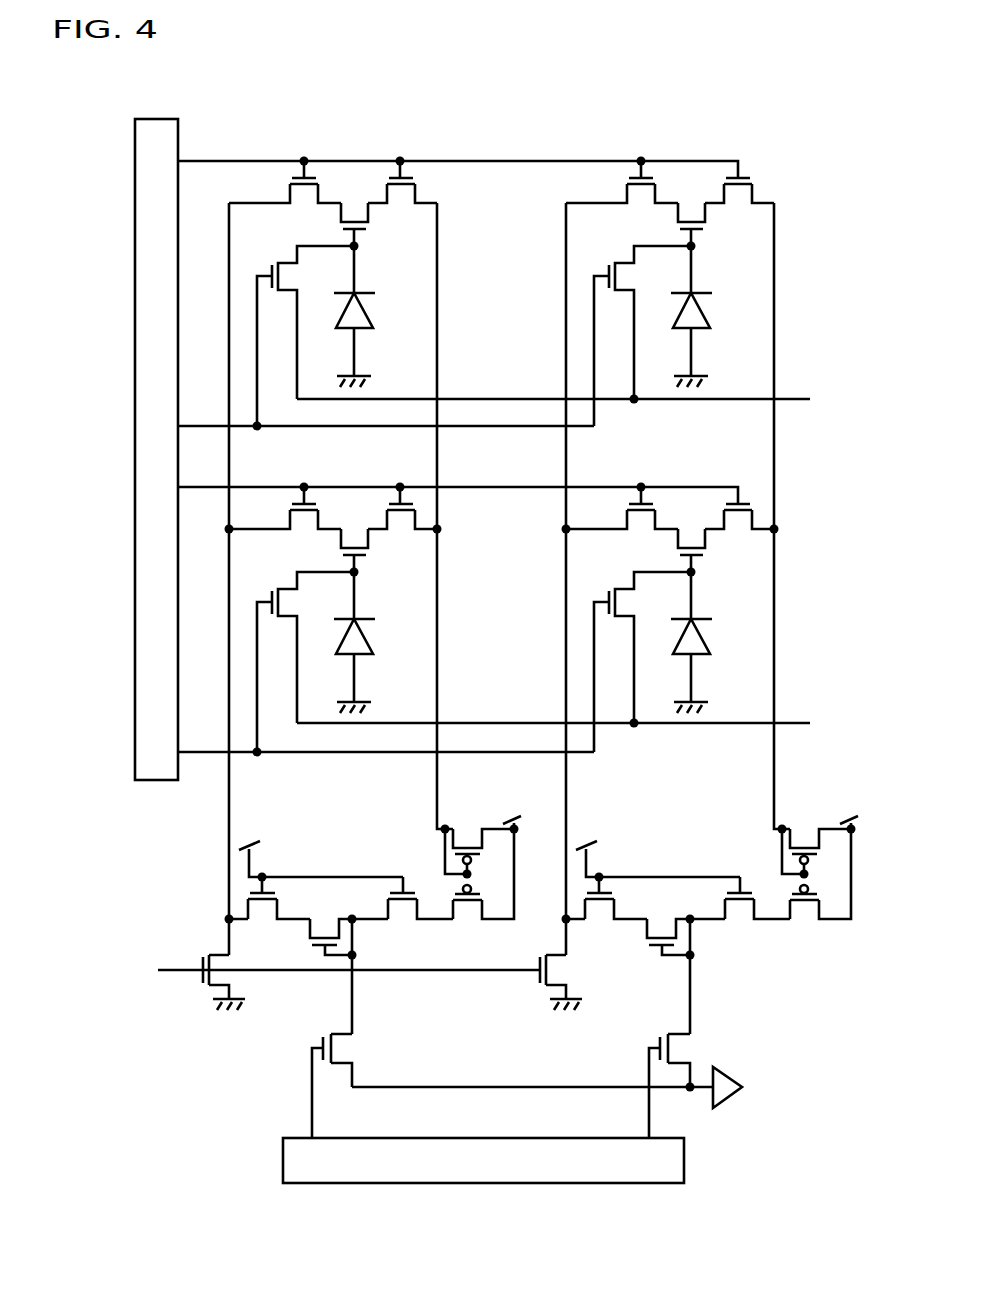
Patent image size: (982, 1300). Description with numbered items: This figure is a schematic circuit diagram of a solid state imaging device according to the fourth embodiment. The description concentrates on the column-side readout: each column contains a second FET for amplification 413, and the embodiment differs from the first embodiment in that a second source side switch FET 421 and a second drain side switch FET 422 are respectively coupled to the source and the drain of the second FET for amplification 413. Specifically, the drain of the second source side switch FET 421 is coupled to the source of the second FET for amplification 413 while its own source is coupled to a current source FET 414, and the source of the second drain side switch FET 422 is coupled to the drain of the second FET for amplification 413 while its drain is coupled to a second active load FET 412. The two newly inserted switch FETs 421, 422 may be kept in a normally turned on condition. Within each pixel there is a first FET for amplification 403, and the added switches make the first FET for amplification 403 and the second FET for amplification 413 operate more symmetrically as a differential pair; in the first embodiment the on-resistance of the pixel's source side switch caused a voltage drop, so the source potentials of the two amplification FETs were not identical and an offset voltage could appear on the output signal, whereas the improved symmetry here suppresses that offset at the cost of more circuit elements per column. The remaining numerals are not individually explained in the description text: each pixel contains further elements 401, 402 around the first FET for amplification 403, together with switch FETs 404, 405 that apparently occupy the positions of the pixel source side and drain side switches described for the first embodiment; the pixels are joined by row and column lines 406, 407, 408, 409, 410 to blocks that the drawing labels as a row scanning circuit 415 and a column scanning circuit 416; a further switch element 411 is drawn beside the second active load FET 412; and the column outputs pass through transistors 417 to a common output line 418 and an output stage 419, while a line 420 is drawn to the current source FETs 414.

The photodiode 401 is at (360, 292).
The amplifying transistor 402 is at (290, 254).
The first FET for amplification 403 is at (355, 218).
The reset transistor 404 is at (288, 197).
The selection transistor 405 is at (420, 192).
The row control line 406 is at (515, 159).
The row reset line 407 is at (597, 416).
The power supply line 408 is at (798, 399).
The vertical signal line 409 is at (230, 809).
The vertical output line 410 is at (774, 506).
The switch transistor 411 is at (470, 838).
The second active load FET 412 is at (468, 903).
The second FET for amplification 413 is at (325, 930).
The current source FET 414 is at (225, 975).
The row scanning circuit 415 is at (135, 708).
The column scanning circuit 416 is at (283, 1160).
The horizontal transfer transistor 417 is at (338, 1050).
The horizontal output line 418 is at (510, 1085).
The output amplifier 419 is at (742, 1108).
The bias line 420 is at (173, 967).
The second source side switch FET 421 is at (263, 903).
The second drain side switch FET 422 is at (403, 903).